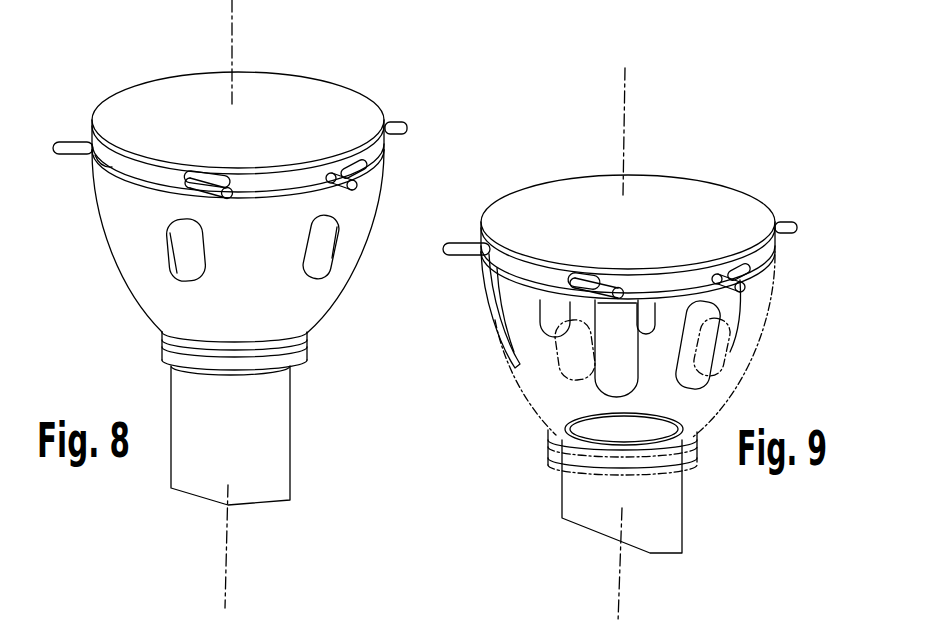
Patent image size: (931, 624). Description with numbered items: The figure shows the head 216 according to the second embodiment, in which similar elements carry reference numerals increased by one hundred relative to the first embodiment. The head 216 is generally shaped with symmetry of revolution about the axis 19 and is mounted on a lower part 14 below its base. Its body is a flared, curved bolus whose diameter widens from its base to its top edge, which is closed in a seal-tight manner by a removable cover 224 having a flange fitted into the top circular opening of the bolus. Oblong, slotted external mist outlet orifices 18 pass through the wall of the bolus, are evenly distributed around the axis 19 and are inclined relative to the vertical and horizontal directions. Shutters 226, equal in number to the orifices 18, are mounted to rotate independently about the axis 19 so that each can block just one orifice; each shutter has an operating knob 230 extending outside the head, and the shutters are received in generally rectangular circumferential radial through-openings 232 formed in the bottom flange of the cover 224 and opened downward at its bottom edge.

In FIG. 8, the shaft 14 is at (292, 410).
In FIG. 9, the shaft 14 is at (682, 500).
In FIG. 8, the external mist outlet orifice 18 is at (175, 261).
In FIG. 8, the axis 19 is at (232, 7).
In FIG. 9, the axis 19 is at (625, 110).
In FIG. 8, the head 216 is at (405, 152).
In FIG. 9, the head 216 is at (662, 172).
In FIG. 8, the removable cover 224 is at (326, 107).
In FIG. 9, the removable cover 224 is at (736, 217).
In FIG. 8, the shutter 226 is at (68, 155).
In FIG. 9, the shutter 226 is at (455, 255).
In FIG. 8, the operating knob 230 is at (358, 186).
In FIG. 9, the operating knob 230 is at (659, 280).
In FIG. 8, the circumferential radial through-opening 232 is at (190, 186).